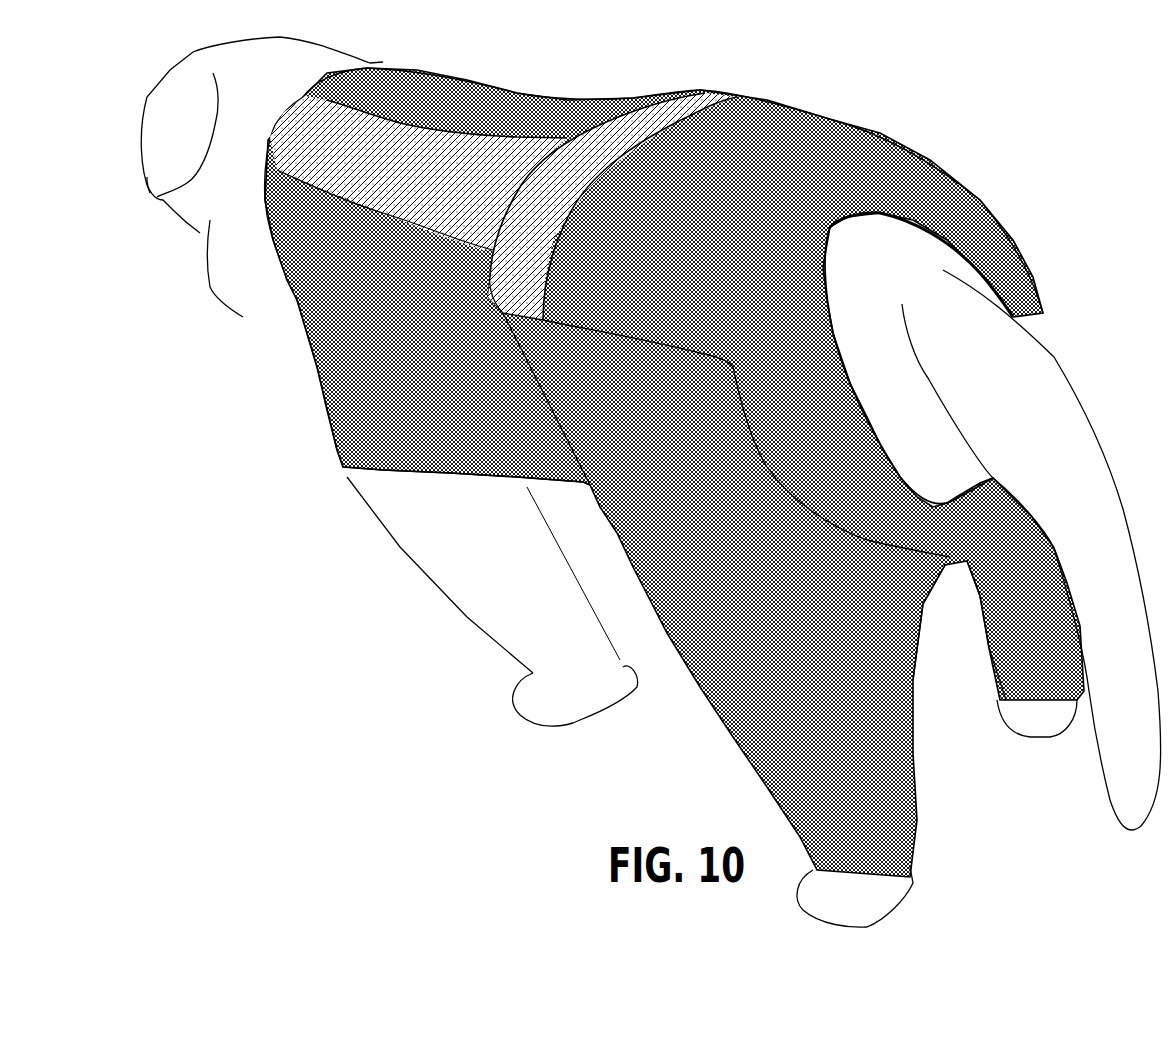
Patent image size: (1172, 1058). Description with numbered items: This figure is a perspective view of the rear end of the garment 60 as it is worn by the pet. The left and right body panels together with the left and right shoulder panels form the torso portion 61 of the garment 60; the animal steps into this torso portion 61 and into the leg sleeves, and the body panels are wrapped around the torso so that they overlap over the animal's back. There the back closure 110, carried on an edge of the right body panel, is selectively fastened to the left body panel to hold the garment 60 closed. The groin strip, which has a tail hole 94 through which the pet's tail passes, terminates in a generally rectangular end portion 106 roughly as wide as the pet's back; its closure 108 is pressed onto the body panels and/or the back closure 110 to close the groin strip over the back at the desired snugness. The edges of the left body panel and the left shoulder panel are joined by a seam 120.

The garment 60 is at (277, 352).
The torso portion 61 is at (535, 68).
The tail hole 94 is at (957, 260).
The end portion 106 is at (745, 180).
The closure 108 is at (573, 170).
The back closure 110 is at (397, 168).
The seam 120 is at (372, 345).